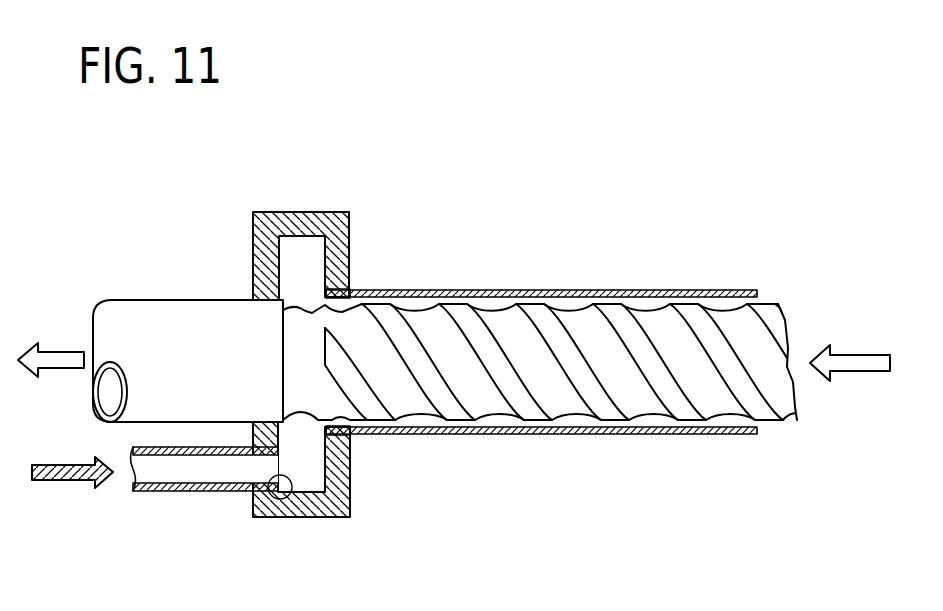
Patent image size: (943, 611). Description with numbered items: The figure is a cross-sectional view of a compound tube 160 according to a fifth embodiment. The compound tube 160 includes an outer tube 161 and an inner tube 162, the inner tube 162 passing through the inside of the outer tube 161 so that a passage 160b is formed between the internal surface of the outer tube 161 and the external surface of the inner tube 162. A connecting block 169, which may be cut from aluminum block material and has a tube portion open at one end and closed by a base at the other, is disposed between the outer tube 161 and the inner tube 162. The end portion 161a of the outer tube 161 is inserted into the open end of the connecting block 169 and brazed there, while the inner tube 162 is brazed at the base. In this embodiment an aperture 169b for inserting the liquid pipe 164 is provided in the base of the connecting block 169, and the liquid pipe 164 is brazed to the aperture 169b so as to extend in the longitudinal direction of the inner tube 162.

The compound tube 160 is at (571, 300).
The passage 160b is at (605, 300).
The outer tube 161 is at (541, 313).
The end portion 161a is at (344, 291).
The inner tube 162 is at (176, 298).
The liquid pipe 164 is at (192, 490).
The connecting block 169 is at (297, 228).
The aperture 169b is at (287, 499).